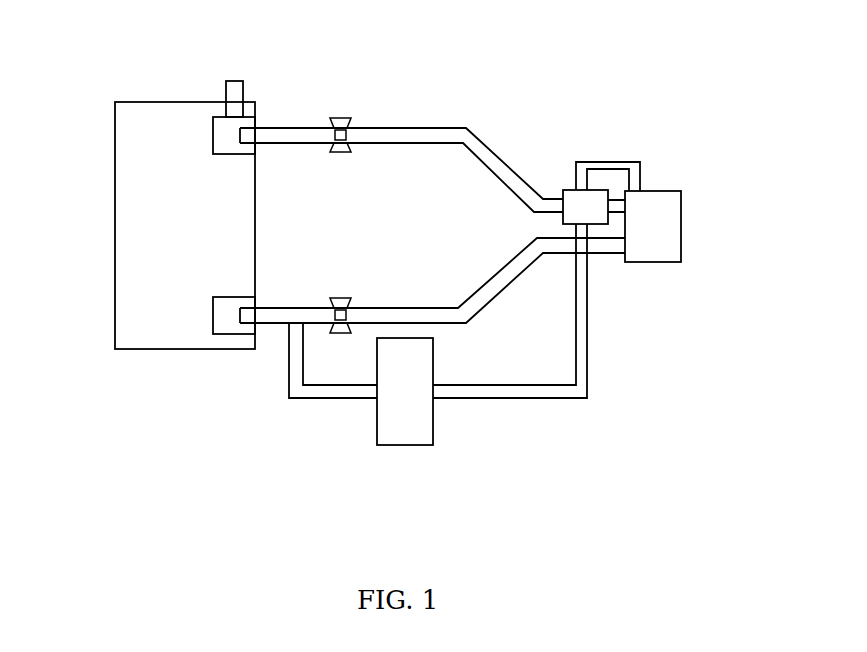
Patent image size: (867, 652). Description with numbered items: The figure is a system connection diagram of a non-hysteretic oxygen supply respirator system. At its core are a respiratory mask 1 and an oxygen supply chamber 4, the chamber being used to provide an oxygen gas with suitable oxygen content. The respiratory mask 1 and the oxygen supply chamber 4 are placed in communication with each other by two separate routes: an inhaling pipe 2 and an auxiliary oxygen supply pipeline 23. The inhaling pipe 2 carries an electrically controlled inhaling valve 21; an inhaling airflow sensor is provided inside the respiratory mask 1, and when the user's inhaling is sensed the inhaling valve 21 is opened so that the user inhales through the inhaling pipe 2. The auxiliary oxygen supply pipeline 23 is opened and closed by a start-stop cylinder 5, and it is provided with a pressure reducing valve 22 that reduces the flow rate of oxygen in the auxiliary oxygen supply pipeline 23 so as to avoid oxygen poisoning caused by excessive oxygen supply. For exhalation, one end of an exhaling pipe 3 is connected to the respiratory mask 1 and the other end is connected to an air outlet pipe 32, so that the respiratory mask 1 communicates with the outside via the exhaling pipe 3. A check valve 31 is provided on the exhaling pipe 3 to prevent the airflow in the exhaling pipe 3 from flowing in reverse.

The respiratory mask 1 is at (677, 223).
The inhaling pipe 2 is at (505, 287).
The exhaling pipe 3 is at (412, 128).
The oxygen supply chamber 4 is at (160, 233).
The start-stop cylinder 5 is at (572, 197).
The inhaling valve 21 is at (340, 335).
The pressure reducing valve 22 is at (406, 446).
The auxiliary oxygen supply pipeline 23 is at (588, 328).
The check valve 31 is at (338, 118).
The air outlet pipe 32 is at (233, 80).